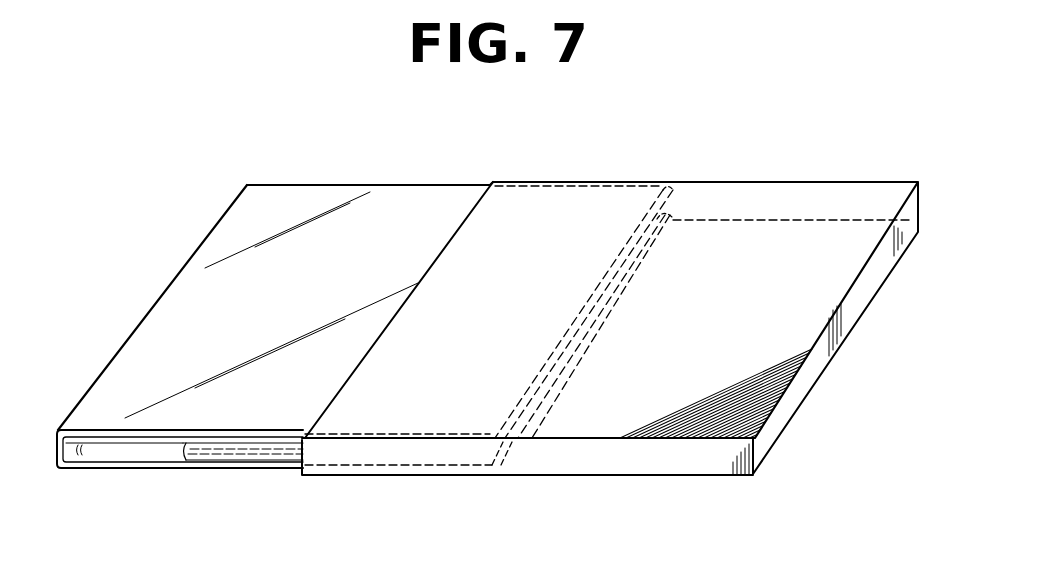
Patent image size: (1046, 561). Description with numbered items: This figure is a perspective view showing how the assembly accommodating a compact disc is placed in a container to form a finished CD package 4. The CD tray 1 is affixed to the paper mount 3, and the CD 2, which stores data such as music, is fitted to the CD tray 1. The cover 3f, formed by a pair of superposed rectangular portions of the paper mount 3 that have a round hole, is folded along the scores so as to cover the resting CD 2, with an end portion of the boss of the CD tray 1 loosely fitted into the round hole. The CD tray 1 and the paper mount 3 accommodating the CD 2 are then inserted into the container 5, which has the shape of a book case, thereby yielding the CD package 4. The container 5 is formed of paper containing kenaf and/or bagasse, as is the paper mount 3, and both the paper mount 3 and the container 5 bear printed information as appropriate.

The CD tray 1 is at (170, 452).
The CD 2 is at (267, 450).
The paper mount 3 is at (330, 195).
The cover 3f is at (417, 215).
The CD package 4 is at (693, 172).
The container 5 is at (552, 197).